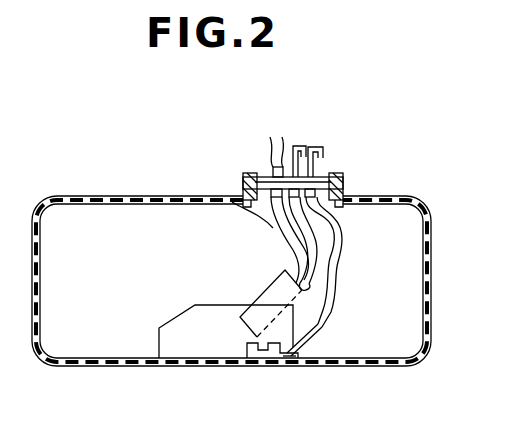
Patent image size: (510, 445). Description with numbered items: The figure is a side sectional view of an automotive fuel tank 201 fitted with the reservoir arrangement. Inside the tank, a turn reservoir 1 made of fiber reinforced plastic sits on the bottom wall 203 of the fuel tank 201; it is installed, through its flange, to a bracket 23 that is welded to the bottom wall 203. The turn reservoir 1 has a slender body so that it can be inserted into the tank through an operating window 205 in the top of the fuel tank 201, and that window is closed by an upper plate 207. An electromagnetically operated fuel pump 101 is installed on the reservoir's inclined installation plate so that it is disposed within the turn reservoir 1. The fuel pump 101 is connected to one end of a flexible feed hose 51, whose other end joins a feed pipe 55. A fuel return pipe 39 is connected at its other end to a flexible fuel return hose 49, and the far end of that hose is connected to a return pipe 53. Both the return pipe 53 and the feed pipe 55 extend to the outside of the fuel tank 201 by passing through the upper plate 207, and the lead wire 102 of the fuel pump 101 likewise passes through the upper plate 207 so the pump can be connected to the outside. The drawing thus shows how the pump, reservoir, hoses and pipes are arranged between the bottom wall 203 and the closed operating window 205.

The turn reservoir 1 is at (173, 307).
The bracket 23 is at (268, 363).
The fuel return pipe 39 is at (316, 327).
The fuel return hose 49 is at (340, 226).
The feed hose 51 is at (322, 248).
The return pipe 53 is at (325, 149).
The feed pipe 55 is at (303, 148).
The fuel pump 101 is at (281, 293).
The lead wire 102 is at (245, 196).
The fuel tank 201 is at (370, 191).
The bottom wall 203 is at (340, 356).
The operating window 205 is at (267, 172).
The upper plate 207 is at (281, 150).